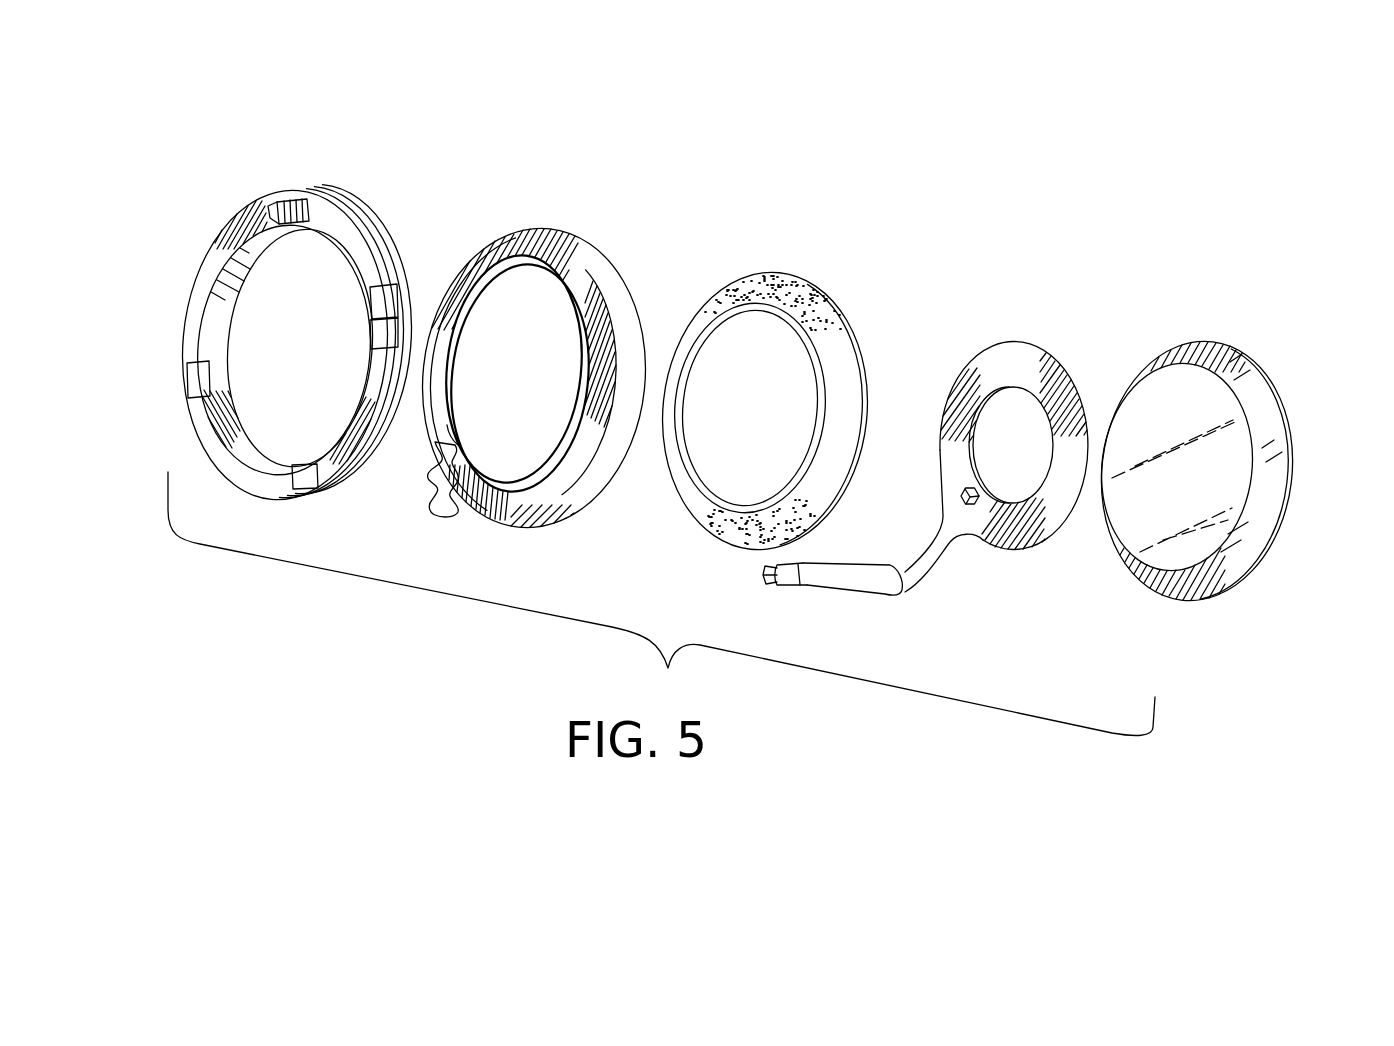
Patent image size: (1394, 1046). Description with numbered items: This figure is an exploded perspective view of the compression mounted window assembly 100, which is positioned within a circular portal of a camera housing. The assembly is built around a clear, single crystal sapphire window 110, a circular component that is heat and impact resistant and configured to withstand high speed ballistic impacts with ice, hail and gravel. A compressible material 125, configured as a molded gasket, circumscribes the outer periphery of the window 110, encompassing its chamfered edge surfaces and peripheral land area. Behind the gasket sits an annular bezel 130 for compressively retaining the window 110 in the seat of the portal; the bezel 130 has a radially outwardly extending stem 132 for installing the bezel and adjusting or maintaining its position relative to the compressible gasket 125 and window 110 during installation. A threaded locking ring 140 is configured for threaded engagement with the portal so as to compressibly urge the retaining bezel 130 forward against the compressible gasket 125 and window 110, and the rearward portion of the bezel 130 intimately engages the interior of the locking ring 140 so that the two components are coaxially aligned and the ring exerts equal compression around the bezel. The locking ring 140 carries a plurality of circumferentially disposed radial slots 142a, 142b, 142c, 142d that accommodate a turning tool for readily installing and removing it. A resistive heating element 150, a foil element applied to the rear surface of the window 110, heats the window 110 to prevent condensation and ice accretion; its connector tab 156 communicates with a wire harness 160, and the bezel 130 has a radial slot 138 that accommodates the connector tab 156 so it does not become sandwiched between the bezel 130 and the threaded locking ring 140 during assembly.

The compression mounted window assembly 100 is at (873, 190).
The window 110 is at (1263, 394).
The compressible material 125 is at (828, 343).
The annular bezel 130 is at (608, 262).
The stem 132 is at (439, 518).
The radial slot 138 is at (458, 445).
The threaded locking ring 140 is at (368, 212).
The radial slot 142a is at (272, 214).
The radial slot 142b is at (376, 300).
The radial slot 142c is at (306, 487).
The radial slot 142d is at (188, 390).
The resistive heating element 150 is at (1052, 500).
The connector tab 156 is at (935, 550).
The wire harness 160 is at (872, 584).